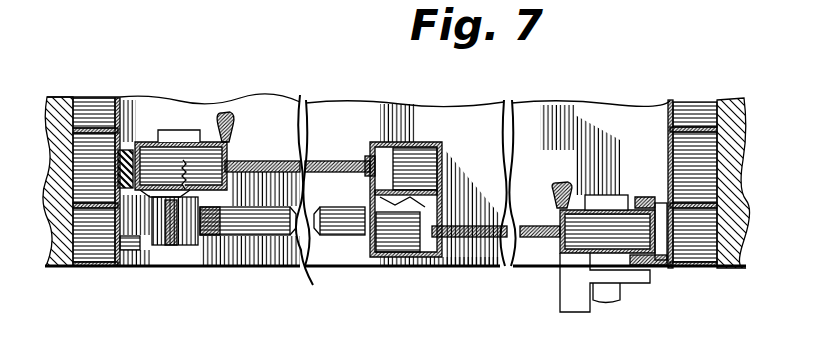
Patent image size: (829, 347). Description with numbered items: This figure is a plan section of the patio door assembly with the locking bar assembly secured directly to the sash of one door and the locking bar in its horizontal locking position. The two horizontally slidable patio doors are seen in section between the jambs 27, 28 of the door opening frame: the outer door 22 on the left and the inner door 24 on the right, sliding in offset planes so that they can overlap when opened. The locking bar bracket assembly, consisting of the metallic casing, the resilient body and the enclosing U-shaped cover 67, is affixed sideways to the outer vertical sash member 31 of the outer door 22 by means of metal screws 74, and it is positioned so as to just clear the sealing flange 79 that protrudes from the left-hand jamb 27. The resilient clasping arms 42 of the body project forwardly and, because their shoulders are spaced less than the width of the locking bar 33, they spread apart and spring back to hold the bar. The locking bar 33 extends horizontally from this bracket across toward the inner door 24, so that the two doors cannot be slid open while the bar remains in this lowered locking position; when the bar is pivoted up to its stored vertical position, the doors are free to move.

The outer door 22 is at (325, 160).
The inner door 24 is at (538, 238).
The jamb 27 is at (90, 267).
The jamb 28 is at (688, 267).
The outer vertical sash member 31 is at (168, 125).
The locking bar 33 is at (345, 242).
The clasping arms 42 is at (200, 237).
The cover 67 is at (178, 237).
The metal screws 74 is at (183, 180).
The sealing flange 79 is at (140, 267).